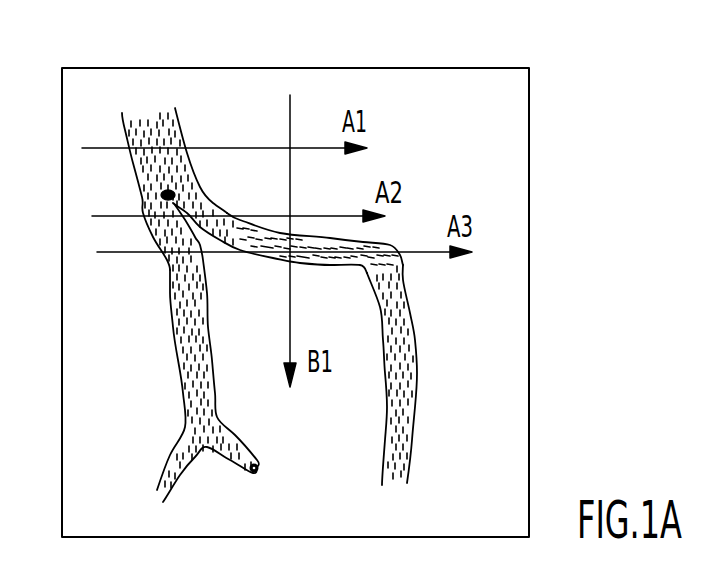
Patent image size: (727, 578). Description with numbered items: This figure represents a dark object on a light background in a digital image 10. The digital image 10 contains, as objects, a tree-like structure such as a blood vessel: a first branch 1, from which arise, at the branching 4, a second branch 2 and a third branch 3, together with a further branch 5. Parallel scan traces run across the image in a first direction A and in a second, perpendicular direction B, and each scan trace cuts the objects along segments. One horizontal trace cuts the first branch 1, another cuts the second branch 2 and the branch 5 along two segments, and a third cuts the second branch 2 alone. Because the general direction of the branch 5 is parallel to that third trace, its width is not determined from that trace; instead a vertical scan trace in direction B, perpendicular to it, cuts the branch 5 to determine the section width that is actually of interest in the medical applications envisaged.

The first branch 1 is at (151, 127).
The second branch 2 is at (177, 306).
The third branch 3 is at (397, 328).
The branching 4 is at (172, 198).
The branch 5 is at (363, 242).
The digital image 10 is at (500, 445).